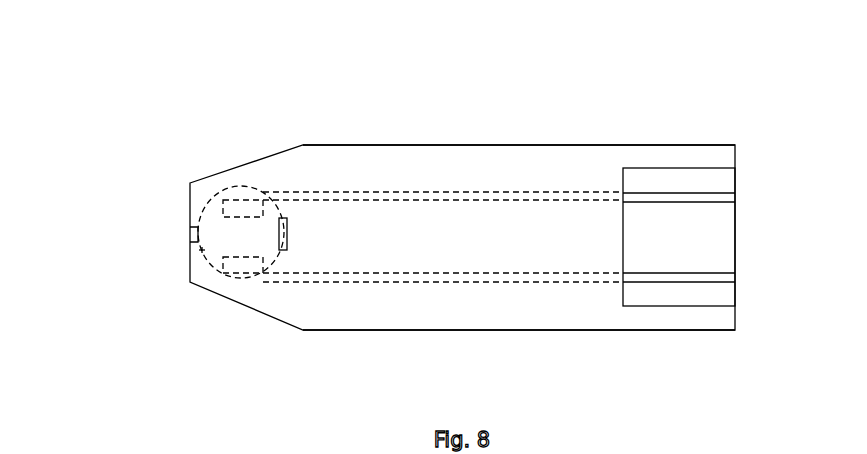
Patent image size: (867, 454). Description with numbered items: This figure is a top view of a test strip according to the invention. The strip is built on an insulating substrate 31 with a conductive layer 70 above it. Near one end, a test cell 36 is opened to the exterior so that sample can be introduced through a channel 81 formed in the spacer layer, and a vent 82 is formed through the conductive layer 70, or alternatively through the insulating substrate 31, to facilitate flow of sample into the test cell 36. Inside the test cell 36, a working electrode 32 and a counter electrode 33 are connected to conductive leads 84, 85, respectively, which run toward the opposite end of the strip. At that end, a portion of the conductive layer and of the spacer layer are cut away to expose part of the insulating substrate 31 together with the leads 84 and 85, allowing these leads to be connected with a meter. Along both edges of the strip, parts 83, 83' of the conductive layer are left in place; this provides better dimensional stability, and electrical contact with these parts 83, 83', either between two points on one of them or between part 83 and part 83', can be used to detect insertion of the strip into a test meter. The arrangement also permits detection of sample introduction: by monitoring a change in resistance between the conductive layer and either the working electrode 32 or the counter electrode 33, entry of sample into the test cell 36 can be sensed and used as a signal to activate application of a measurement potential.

The conductive layer 70 is at (497, 244).
The insulating substrate 31 is at (697, 244).
The working electrode 32 is at (237, 258).
The counter electrode 33 is at (246, 213).
The test cell 36 is at (215, 240).
The channel 81 is at (198, 242).
The vent 82 is at (281, 228).
The part of the conductive layer 83 is at (519, 90).
The part of the conductive layer 83' is at (528, 382).
The conductive lead 84 is at (720, 283).
The conductive lead 85 is at (720, 200).